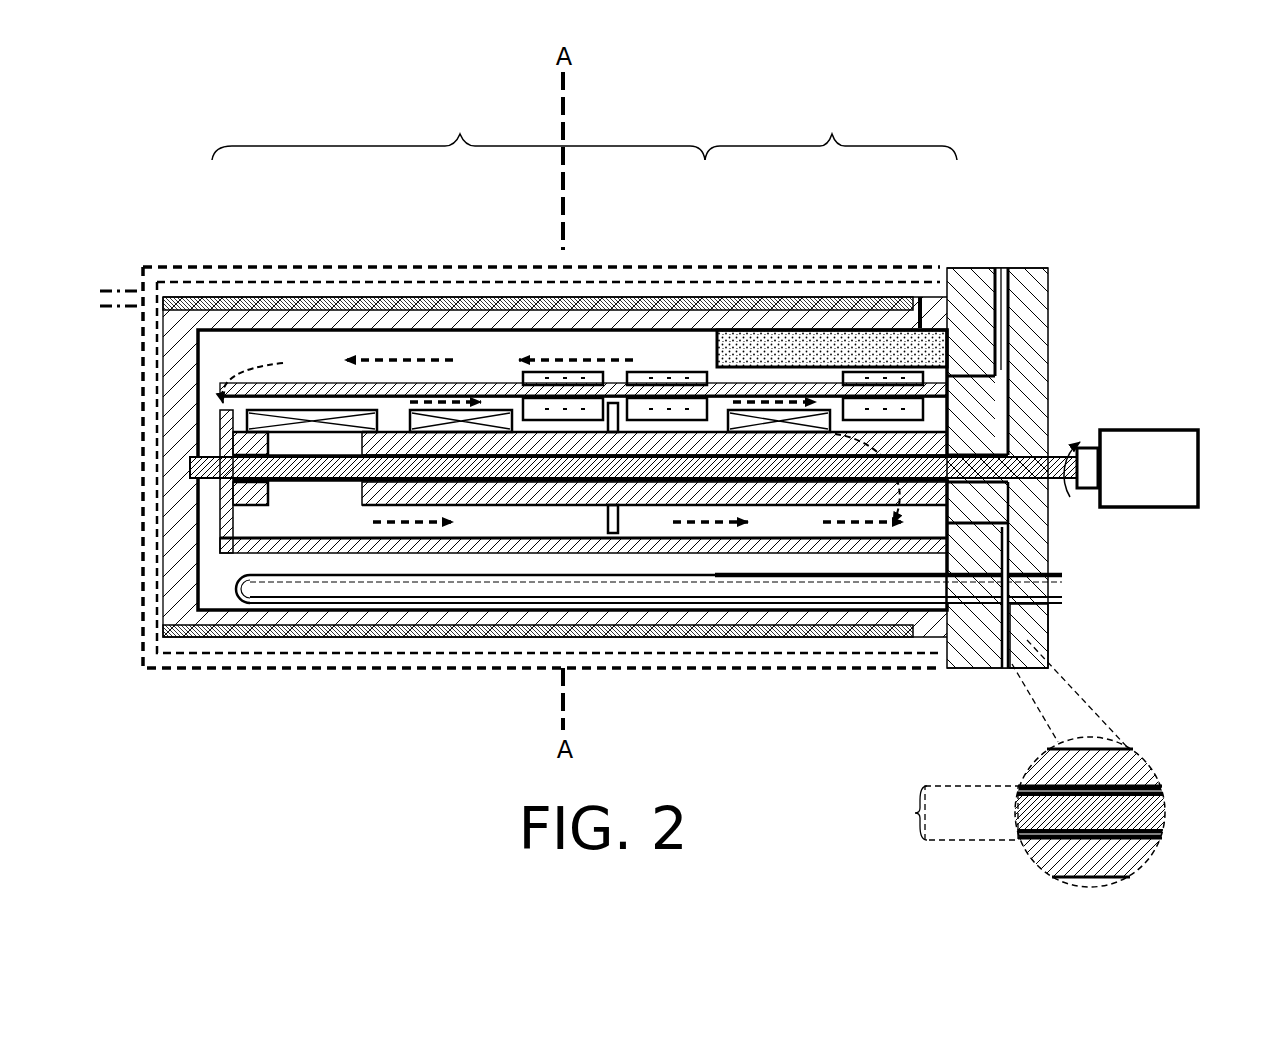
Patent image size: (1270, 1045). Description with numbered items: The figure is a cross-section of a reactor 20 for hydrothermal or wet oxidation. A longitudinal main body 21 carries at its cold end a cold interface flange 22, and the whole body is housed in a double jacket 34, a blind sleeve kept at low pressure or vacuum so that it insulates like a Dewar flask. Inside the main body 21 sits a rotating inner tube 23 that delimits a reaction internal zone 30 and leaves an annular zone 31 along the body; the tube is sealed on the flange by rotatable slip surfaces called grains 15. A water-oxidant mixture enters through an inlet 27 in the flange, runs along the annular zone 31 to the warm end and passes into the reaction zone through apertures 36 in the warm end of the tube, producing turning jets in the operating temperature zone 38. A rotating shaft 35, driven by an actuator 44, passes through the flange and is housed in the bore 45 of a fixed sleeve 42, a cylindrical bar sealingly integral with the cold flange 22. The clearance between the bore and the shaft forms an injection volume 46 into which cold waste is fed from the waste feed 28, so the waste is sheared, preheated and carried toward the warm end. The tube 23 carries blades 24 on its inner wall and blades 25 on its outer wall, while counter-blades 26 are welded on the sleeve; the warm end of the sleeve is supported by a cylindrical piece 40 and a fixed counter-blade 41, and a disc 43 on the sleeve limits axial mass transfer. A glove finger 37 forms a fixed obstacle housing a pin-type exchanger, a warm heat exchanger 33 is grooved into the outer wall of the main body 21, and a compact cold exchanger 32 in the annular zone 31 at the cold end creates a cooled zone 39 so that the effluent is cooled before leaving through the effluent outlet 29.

The grains 15 is at (948, 390).
The reactor 20 is at (1050, 156).
The longitudinal main body 21 is at (820, 632).
The cold interface flange 22 is at (1047, 662).
The inner tube 23 is at (225, 528).
The blades 24 is at (575, 372).
The blades 25 is at (566, 400).
The counter-blades 26 is at (490, 410).
The inlet 27 is at (993, 268).
The waste feed 28 is at (1006, 268).
The effluent outlet 29 is at (1010, 665).
The reaction internal zone 30 is at (320, 525).
The annular zone 31 is at (290, 345).
The cold exchanger 32 is at (865, 345).
The heat exchanger 33 is at (255, 298).
The double jacket 34 is at (156, 266).
The rotating shaft 35 is at (347, 478).
The aperture 36 is at (222, 404).
The glove finger 37 is at (234, 591).
The operating temperature zone 38 is at (458, 129).
The cooled zone 39 is at (831, 129).
The cylindrical piece 40 is at (233, 490).
The fixed counter-blade 41 is at (318, 424).
The fixed sleeve 42 is at (508, 492).
The disc 43 is at (625, 525).
The actuator 44 is at (1152, 430).
The bore 45 is at (948, 813).
The injection volume 46 is at (711, 453).